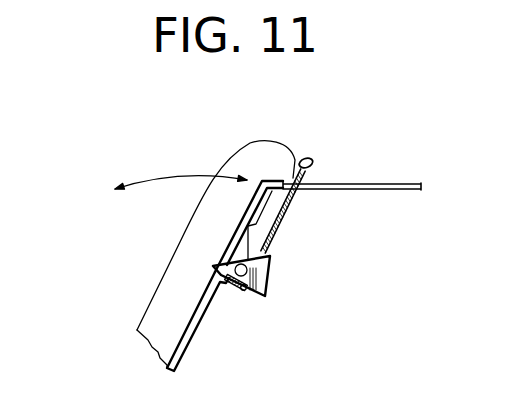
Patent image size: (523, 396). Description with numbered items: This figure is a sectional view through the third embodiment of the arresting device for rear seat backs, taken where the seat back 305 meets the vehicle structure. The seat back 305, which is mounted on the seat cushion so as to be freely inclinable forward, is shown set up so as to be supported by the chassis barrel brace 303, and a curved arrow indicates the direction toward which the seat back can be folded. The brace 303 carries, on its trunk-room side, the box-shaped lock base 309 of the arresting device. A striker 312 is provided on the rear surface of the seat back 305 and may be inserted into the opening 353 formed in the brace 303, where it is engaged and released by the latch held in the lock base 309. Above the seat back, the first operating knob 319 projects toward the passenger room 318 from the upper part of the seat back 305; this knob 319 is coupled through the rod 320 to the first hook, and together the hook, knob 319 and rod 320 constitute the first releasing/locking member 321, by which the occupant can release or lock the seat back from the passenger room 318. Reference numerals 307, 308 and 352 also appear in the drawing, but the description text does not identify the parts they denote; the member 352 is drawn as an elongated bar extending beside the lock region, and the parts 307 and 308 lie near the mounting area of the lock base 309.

The chassis barrel brace 303 is at (184, 350).
The seat back 305 is at (167, 292).
The mounting plate 307 is at (252, 298).
The region 308 is at (385, 334).
The lock base 309 is at (268, 284).
The striker 312 is at (229, 294).
The passenger room 318 is at (190, 137).
The first operating knob 319 is at (310, 157).
The rod 320 is at (270, 240).
The first releasing/locking member 321 is at (293, 215).
The bar 352 is at (401, 191).
The opening 353 is at (235, 271).